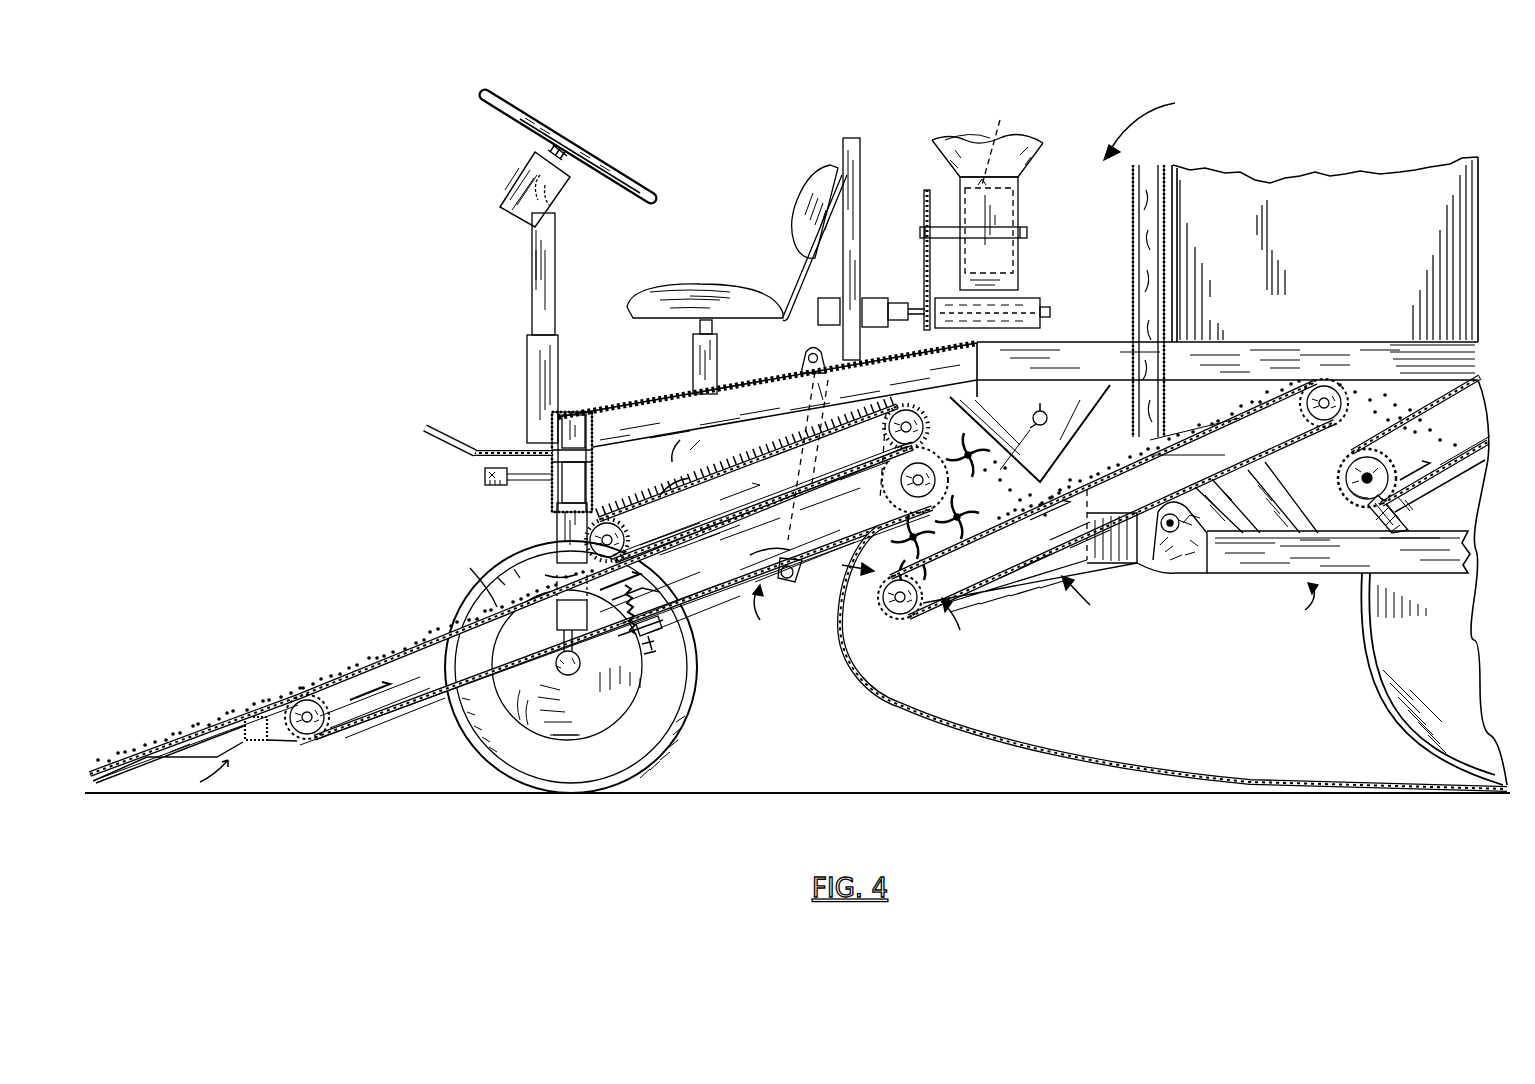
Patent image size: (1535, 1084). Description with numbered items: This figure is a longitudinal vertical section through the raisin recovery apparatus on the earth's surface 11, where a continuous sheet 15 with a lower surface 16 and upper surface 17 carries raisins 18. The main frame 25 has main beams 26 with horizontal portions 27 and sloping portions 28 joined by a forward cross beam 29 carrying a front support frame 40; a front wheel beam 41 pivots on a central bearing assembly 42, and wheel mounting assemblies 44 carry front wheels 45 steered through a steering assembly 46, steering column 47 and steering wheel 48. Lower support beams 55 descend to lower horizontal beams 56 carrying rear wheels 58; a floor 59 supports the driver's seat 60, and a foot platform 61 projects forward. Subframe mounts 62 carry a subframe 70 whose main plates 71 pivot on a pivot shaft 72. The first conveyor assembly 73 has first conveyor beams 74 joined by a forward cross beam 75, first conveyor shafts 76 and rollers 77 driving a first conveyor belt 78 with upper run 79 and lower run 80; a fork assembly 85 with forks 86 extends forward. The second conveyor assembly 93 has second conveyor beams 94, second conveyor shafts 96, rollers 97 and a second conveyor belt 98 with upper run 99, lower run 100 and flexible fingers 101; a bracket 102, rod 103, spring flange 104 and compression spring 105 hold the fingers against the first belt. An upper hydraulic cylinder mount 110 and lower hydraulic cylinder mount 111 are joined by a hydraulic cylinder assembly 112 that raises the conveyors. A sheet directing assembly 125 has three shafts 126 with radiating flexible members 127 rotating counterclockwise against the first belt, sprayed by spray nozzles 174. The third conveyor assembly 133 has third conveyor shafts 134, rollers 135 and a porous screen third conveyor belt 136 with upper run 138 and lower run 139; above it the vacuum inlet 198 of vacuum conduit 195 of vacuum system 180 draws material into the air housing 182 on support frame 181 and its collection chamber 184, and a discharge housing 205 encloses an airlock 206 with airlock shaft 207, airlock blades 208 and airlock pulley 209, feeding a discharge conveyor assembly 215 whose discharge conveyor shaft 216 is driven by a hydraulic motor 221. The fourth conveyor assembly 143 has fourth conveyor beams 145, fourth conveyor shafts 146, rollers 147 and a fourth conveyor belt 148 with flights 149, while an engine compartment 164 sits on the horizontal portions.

The earth's surface 11 is at (358, 790).
The pick-up plate 15 is at (125, 740).
The belt edge 16 is at (105, 770).
The upper surface 17 is at (180, 735).
The raisins 18 is at (272, 706).
The main frame 25 is at (1338, 574).
The main beams 26 is at (1180, 345).
The horizontal portions 27 is at (1245, 345).
The sloping portions 28 is at (675, 450).
The forward cross beam 29 is at (600, 432).
The front support frame 40 is at (552, 425).
The front wheel beam 41 is at (540, 452).
The central bearing assembly 42 is at (552, 488).
The wheel mounting assemblies 44 is at (556, 532).
The front wheel 45 is at (478, 760).
The steering assembly 46 is at (485, 480).
The steering column 47 is at (528, 288).
The steering wheel 48 is at (483, 97).
The lower support beams 55 is at (1252, 478).
The lower horizontal beams 56 is at (1274, 575).
The rear wheels 58 is at (1360, 660).
The floor 59 is at (648, 392).
The driver's seat 60 is at (685, 288).
The foot platform 61 is at (425, 428).
The subframe mounts 62 is at (1178, 575).
The subframe 70 is at (1085, 598).
The main plates 71 is at (1110, 565).
The pivot shaft 72 is at (1182, 527).
The first conveyor assembly 73 is at (770, 602).
The first conveyor beams 74 is at (325, 725).
The forward cross beam 75 is at (258, 745).
The first conveyor shafts 76 is at (312, 702).
The rollers 77 is at (370, 700).
The first conveyor belt 78 is at (525, 680).
The upper run 79 is at (485, 585).
The lower run 80 is at (455, 700).
The fork assembly 85 is at (201, 774).
The forks 86 is at (233, 725).
The second conveyor assembly 93 is at (695, 445).
The second conveyor beams 94 is at (756, 483).
The second conveyor shafts 96 is at (612, 540).
The rollers 97 is at (645, 548).
The second conveyor belt 98 is at (560, 572).
The upper run 99 is at (790, 452).
The lower run 100 is at (735, 535).
The flexible fingers 101 is at (670, 490).
The bracket 102 is at (570, 613).
The rod 103 is at (672, 645).
The spring flange 104 is at (672, 625).
The compression spring 105 is at (668, 608).
The upper hydraulic cylinder mount 110 is at (808, 350).
The lower hydraulic cylinder mount 111 is at (795, 578).
The hydraulic cylinder assembly 112 is at (818, 410).
The sheet directing assembly 125 is at (841, 562).
The shafts 126 is at (975, 455).
The radiating flexible members 127 is at (990, 462).
The third conveyor assembly 133 is at (1112, 514).
The third conveyor shafts 134 is at (898, 605).
The rollers 135 is at (892, 610).
The third conveyor belt 136 is at (1015, 582).
The upper run 138 is at (1240, 418).
The lower run 139 is at (1215, 480).
The fourth conveyor assembly 143 is at (1425, 508).
The fourth conveyor beams 145 is at (1470, 410).
The fourth conveyor shafts 146 is at (1380, 470).
The rollers 147 is at (1345, 470).
The fourth conveyor belt 148 is at (1470, 455).
The flights 149 is at (1445, 380).
The engine compartment 164 is at (1325, 249).
The spray nozzles 174 is at (1043, 410).
The vacuum system 180 is at (1156, 125).
The support frame 181 is at (858, 180).
The air housing 182 is at (1043, 152).
The collection chamber 184 is at (980, 143).
The vacuum conduit 195 is at (1164, 215).
The vacuum inlet 198 is at (1143, 432).
The discharge housing 205 is at (1018, 262).
The airlock 206 is at (1015, 205).
The airlock shaft 207 is at (1028, 233).
The airlock blades 208 is at (1010, 147).
The airlock pulley 209 is at (925, 262).
The discharge conveyor assembly 215 is at (1035, 298).
The discharge conveyor shaft 216 is at (918, 320).
The hydraulic motor 221 is at (822, 300).